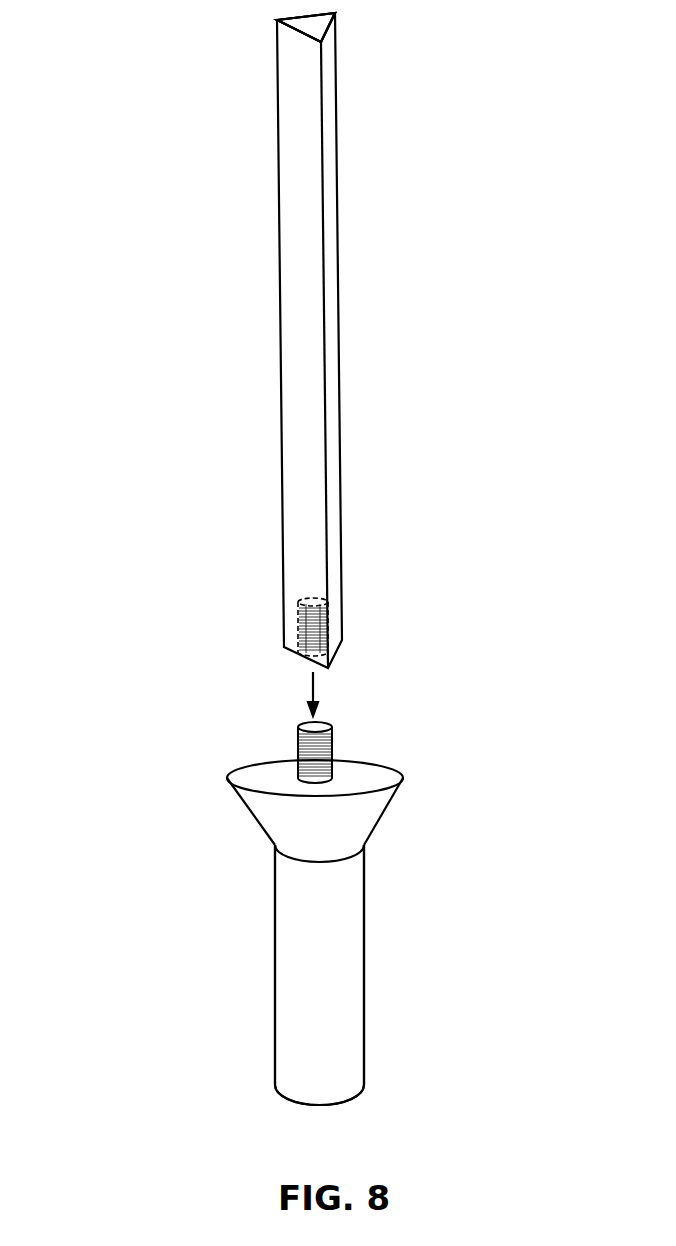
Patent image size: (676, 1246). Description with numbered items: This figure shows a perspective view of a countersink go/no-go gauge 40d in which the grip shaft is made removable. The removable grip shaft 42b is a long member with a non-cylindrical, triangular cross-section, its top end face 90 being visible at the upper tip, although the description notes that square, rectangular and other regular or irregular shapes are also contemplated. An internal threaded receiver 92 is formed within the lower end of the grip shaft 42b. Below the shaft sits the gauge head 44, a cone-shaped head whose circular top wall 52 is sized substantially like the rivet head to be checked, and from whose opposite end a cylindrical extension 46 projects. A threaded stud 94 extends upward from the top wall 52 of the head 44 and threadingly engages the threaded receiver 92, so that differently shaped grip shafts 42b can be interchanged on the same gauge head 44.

The countersink go/no-go gauge 40d is at (222, 481).
The removable grip shaft 42b is at (330, 248).
The top face of post 90 is at (313, 25).
The internal threaded receiver 92 is at (313, 630).
The threaded stud 94 is at (325, 743).
The top wall 52 is at (350, 782).
The gauge head 44 is at (375, 820).
The cylindrical extension 46 is at (332, 993).